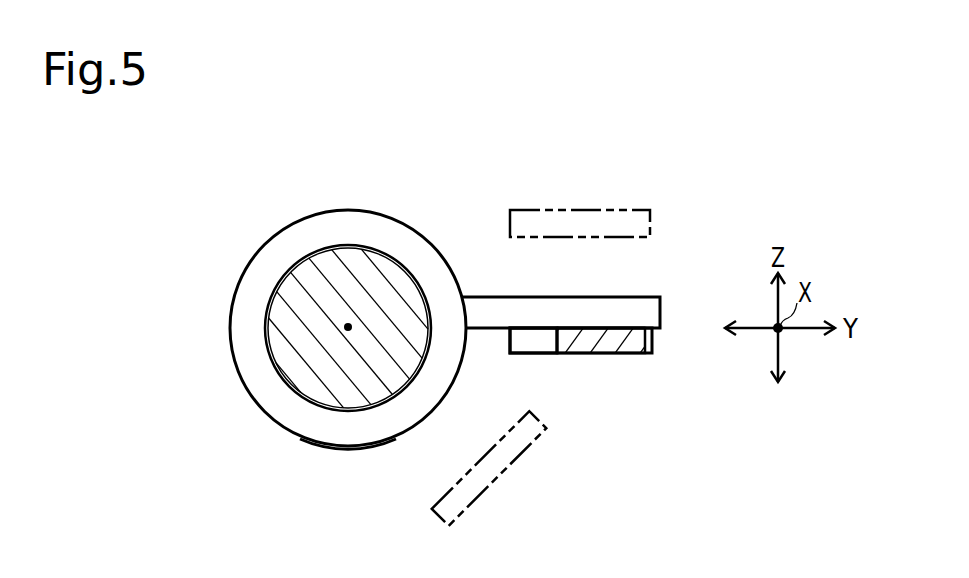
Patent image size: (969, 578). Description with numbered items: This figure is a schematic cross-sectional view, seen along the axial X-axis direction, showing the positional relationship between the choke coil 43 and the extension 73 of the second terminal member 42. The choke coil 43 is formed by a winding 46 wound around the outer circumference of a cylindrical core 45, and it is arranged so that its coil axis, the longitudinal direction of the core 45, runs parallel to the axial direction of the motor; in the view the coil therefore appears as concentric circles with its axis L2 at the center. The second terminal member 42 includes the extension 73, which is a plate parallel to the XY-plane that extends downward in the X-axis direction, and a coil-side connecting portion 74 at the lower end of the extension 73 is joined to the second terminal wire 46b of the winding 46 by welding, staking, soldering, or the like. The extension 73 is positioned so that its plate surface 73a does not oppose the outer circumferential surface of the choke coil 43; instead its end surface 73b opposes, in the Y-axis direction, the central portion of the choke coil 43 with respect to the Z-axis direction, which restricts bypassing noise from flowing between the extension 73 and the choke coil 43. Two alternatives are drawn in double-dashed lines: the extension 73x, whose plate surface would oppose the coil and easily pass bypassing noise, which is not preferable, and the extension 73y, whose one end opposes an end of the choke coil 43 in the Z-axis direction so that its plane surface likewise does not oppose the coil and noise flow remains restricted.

The second terminal member 42 is at (644, 330).
The choke coil 43 is at (337, 438).
The core 45 is at (275, 230).
The winding 46 is at (280, 289).
The second terminal wire 46b is at (627, 297).
The extension 73 is at (602, 340).
The plate surface 73a is at (592, 319).
The end surface 73b is at (547, 334).
The extension 73x is at (482, 477).
The extension 73y is at (567, 202).
The coil-side connecting portion 74 is at (522, 339).
The optical axis L2 is at (336, 322).